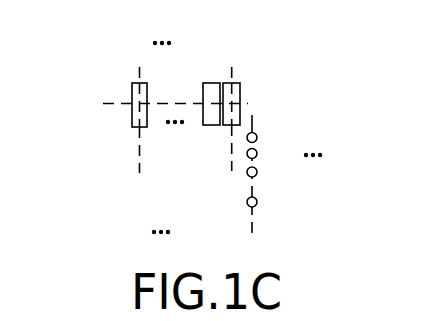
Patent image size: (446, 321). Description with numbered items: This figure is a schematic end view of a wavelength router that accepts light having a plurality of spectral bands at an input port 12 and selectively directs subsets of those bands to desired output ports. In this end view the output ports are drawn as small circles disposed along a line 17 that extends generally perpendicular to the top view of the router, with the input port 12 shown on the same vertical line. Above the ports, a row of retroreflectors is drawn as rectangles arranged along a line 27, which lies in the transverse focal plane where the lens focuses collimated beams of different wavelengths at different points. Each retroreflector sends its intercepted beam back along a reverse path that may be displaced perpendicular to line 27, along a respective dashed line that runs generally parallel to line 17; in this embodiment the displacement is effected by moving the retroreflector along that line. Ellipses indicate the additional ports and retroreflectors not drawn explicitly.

The line 17 is at (254, 116).
The input port 12 is at (257, 202).
The line 27 is at (117, 104).